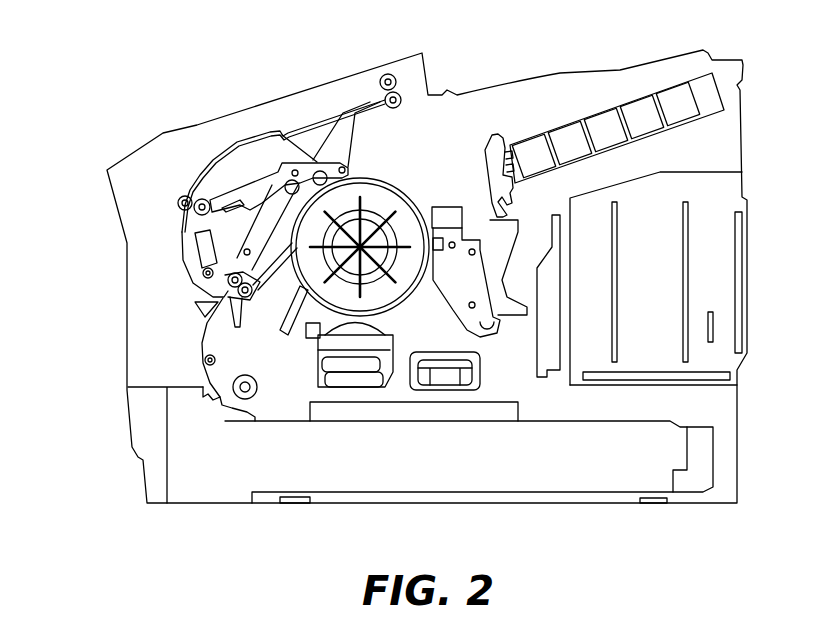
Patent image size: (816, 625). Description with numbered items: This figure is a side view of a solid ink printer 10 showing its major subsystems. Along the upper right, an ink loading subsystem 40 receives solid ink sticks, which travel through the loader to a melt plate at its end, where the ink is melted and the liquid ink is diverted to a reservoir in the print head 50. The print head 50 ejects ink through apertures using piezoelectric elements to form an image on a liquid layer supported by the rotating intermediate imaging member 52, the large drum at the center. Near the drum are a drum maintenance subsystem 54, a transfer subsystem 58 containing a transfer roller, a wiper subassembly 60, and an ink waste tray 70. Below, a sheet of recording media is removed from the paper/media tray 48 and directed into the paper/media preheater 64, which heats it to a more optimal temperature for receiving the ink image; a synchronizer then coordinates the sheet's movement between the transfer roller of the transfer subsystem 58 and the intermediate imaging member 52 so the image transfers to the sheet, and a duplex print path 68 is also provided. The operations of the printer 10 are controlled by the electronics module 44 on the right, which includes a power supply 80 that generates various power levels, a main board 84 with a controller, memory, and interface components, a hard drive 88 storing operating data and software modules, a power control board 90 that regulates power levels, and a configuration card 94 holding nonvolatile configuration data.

The ink printer 10 is at (85, 302).
The ink loading subsystem 40 is at (635, 100).
The electronics module 44 is at (704, 171).
The paper/media tray 48 is at (477, 487).
The print head 50 is at (453, 214).
The intermediate imaging member 52 is at (378, 200).
The drum maintenance subsystem 54 is at (395, 348).
The transfer subsystem 58 is at (292, 183).
The wiper subassembly 60 is at (283, 335).
The paper/media preheater 64 is at (233, 297).
The duplex print path 68 is at (197, 180).
The ink waste tray 70 is at (483, 380).
The power supply 80 is at (617, 233).
The main board 84 is at (690, 235).
The hard drive 88 is at (742, 288).
The power control board 90 is at (673, 380).
The configuration card 94 is at (717, 328).